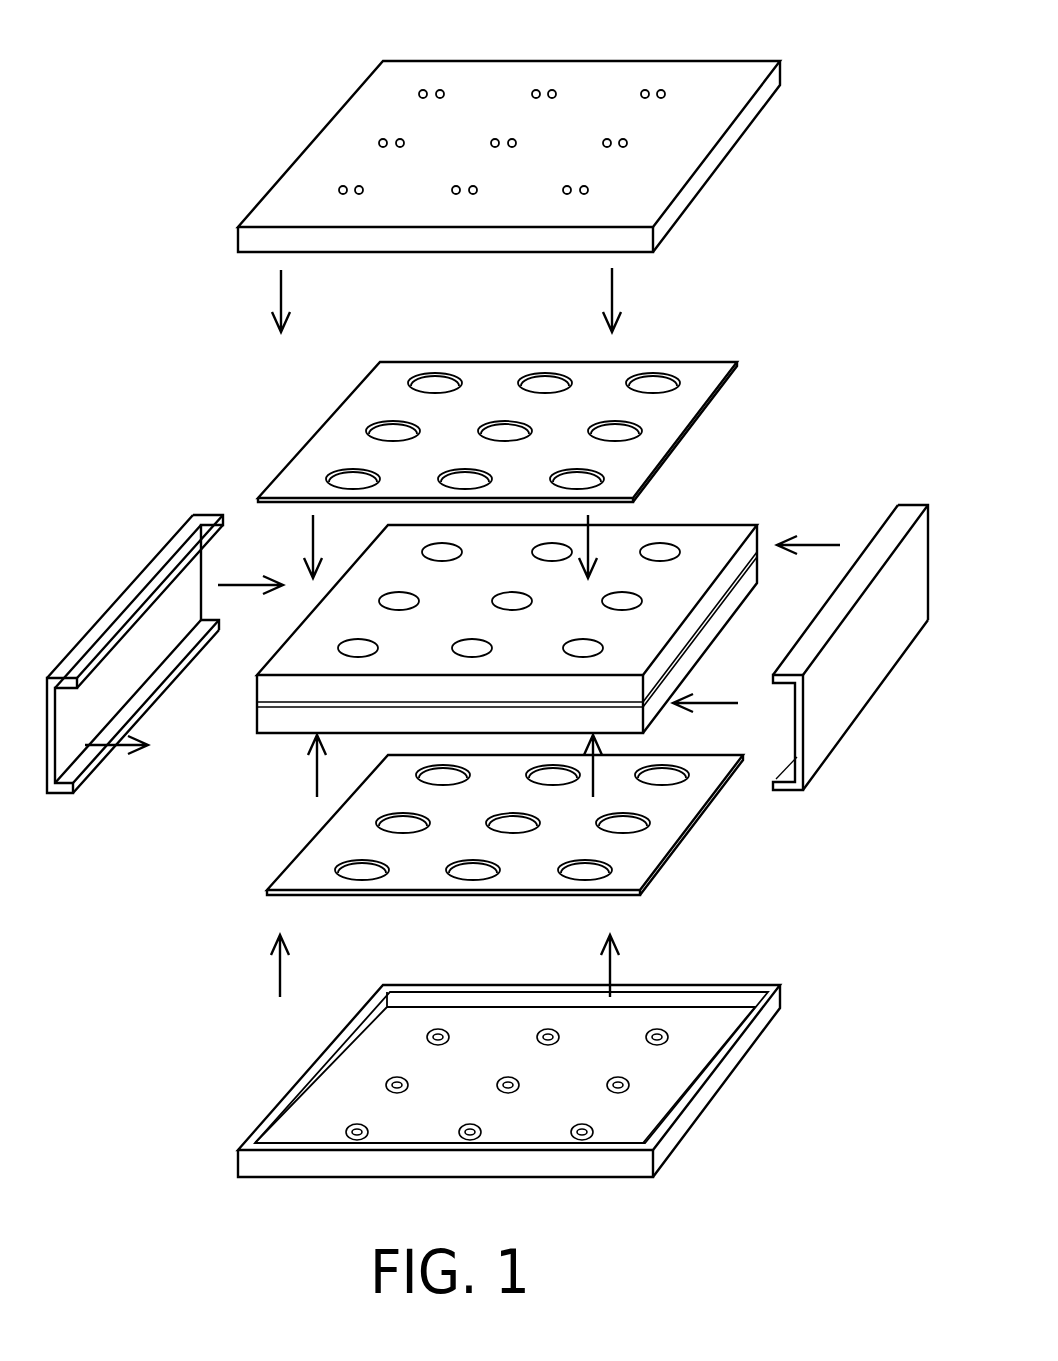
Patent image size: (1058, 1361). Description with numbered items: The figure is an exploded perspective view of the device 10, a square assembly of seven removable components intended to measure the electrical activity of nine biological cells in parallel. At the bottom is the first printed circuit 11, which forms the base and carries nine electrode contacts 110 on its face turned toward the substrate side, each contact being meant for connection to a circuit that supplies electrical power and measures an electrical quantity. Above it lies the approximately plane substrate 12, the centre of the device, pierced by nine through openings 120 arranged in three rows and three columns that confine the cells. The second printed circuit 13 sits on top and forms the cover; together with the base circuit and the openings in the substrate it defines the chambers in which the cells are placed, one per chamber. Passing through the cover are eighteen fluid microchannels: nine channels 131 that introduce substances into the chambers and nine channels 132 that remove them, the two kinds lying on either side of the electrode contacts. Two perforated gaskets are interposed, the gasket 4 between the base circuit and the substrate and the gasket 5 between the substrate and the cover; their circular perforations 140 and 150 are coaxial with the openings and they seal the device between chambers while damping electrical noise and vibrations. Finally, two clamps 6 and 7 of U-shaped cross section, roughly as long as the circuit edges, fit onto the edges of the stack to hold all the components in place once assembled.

The device 10 is at (128, 172).
The second printed circuit 13 is at (722, 153).
The channels 131 is at (643, 89).
The channels 132 is at (662, 89).
The perforated gasket 5 is at (698, 420).
The circular perforations 150 is at (653, 387).
The substrate 12 is at (248, 675).
The through openings 120 is at (663, 552).
The clamp 6 is at (130, 597).
The clamp 7 is at (853, 697).
The perforated gasket 4 is at (683, 840).
The circular perforations 140 is at (350, 868).
The first printed circuit 11 is at (720, 1075).
The electrode contacts 110 is at (438, 1030).